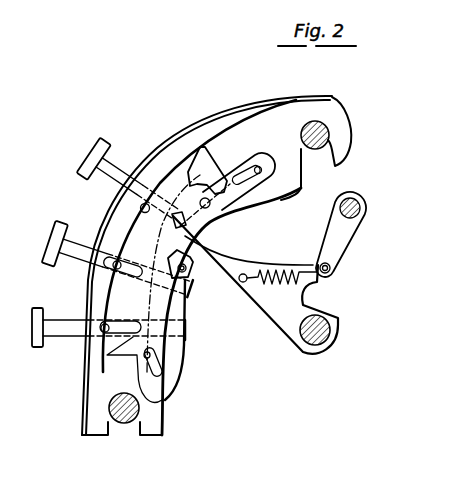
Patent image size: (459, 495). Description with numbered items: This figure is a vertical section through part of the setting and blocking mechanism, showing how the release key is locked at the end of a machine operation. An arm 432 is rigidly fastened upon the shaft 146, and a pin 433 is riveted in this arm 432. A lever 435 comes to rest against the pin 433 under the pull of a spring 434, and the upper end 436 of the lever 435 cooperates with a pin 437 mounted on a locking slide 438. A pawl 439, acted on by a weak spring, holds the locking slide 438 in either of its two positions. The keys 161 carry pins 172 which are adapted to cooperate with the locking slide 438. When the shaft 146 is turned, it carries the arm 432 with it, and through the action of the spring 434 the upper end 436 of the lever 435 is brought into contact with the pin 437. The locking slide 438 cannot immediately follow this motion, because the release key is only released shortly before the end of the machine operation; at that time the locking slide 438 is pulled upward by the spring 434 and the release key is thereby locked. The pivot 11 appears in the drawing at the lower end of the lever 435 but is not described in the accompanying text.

The pivot pin 11 is at (327, 343).
The pivot pin of lever 146 is at (362, 200).
The push rods 161 is at (40, 310).
The guide pin 172 is at (140, 209).
The lever 432 is at (352, 233).
The pin 433 is at (335, 271).
The spring 434 is at (275, 283).
The arm 435 is at (298, 307).
The pin 436 is at (176, 214).
The lever 437 is at (208, 206).
The pawl 438 is at (189, 186).
The pawl 439 is at (186, 263).